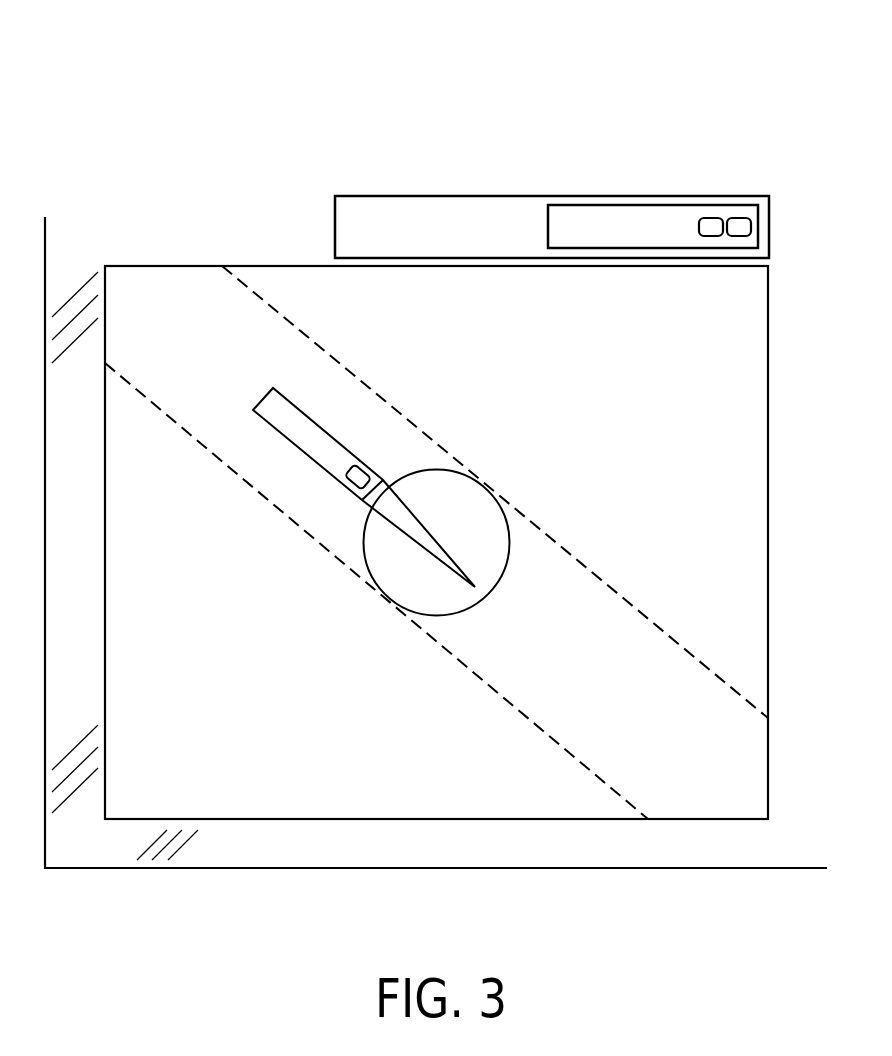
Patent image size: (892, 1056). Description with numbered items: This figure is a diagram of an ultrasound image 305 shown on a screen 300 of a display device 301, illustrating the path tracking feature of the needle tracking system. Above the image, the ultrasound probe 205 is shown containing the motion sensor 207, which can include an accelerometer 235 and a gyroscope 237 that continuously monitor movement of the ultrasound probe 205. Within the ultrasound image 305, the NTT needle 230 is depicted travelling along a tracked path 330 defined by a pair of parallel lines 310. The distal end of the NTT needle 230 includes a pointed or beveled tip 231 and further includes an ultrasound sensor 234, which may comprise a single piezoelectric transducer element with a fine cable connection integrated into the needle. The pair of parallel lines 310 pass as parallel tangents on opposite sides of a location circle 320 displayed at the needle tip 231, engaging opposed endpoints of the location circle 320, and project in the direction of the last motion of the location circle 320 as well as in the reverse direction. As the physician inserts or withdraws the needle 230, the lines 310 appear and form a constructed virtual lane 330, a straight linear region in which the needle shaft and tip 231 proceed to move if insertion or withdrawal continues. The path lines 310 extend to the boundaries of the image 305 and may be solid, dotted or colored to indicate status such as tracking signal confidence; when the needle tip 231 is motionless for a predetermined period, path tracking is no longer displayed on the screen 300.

The screen 300 is at (745, 84).
The display device 301 is at (85, 870).
The ultrasound image 305 is at (255, 266).
The ultrasound probe 205 is at (440, 196).
The motion sensor 207 is at (595, 205).
The accelerometer 235 is at (710, 218).
The gyroscope 237 is at (738, 218).
The parallel lines 310 is at (552, 540).
The NTT needle 230 is at (293, 398).
The ultrasound sensor 234 is at (343, 490).
The beveled tip 231 is at (433, 555).
The location circle 320 is at (500, 503).
The tracked path 330 is at (528, 593).